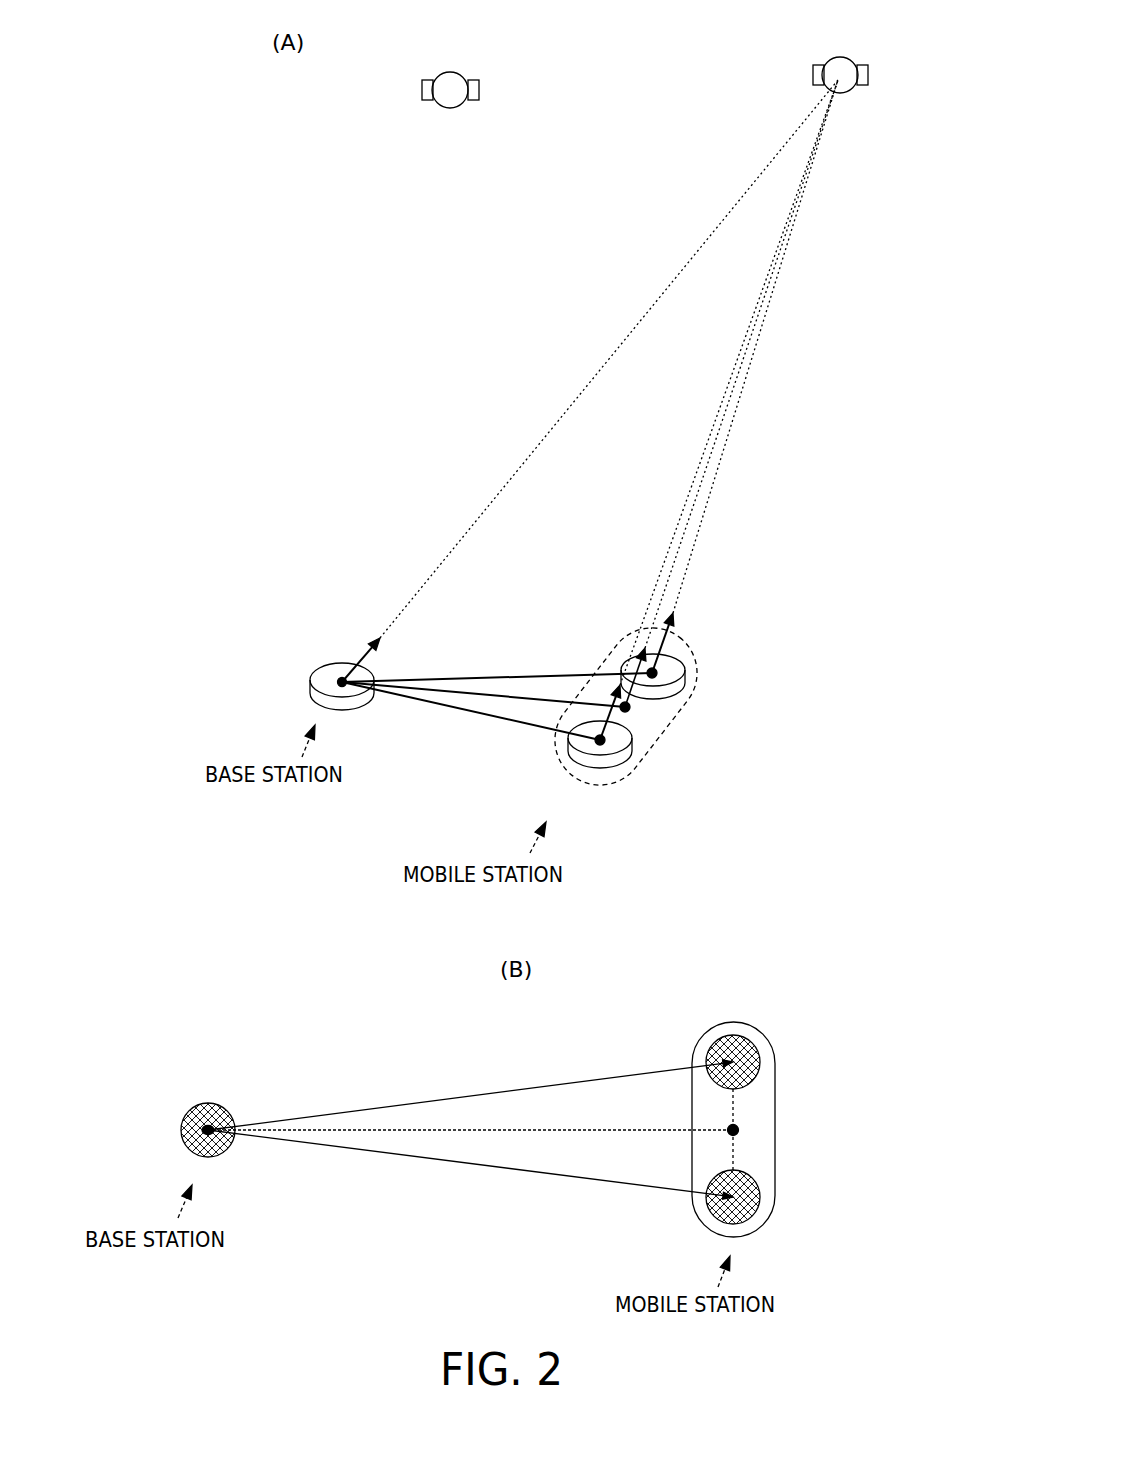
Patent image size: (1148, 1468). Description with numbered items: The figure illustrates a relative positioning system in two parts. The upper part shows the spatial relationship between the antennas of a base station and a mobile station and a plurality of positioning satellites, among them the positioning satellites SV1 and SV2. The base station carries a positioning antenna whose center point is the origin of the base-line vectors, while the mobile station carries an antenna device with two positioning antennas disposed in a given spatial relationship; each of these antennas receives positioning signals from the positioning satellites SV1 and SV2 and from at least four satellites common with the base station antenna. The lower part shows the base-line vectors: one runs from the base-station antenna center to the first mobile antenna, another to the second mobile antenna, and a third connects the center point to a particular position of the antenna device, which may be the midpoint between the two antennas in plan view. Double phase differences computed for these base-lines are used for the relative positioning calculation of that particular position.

The positioning satellite SV1 is at (856, 63).
The positioning satellite SV2 is at (466, 78).